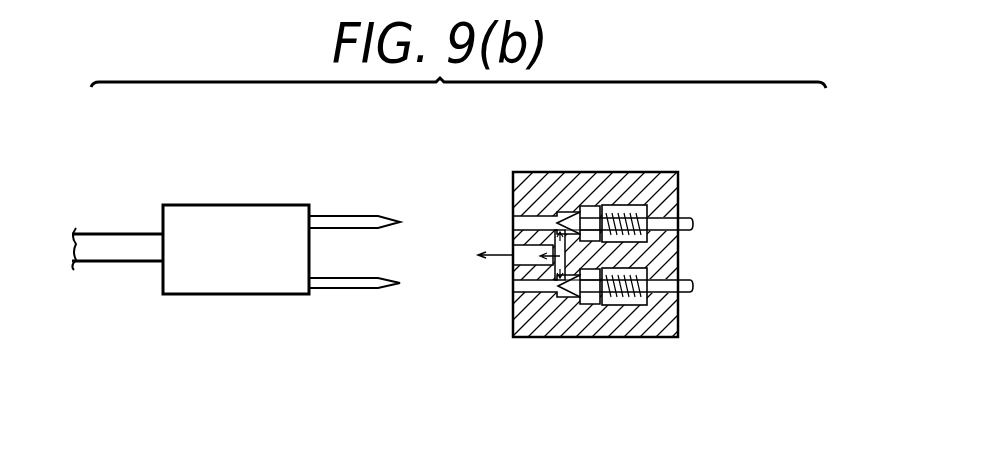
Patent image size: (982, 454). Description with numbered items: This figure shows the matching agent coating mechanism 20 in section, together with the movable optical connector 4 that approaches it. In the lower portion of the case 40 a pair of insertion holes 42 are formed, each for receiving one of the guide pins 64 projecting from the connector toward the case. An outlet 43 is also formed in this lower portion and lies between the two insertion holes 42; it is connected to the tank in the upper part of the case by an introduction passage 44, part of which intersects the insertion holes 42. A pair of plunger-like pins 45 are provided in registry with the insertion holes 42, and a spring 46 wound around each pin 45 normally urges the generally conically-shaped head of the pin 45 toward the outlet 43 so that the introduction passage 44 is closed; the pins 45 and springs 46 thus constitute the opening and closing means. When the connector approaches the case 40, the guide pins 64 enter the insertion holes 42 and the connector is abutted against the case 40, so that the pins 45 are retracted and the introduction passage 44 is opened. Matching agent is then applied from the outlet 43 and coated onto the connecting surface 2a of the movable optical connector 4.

The connector plug 4 is at (210, 290).
The connecting surface 2a is at (312, 252).
The guide pin 64 is at (344, 222).
The matching agent coating mechanism 20 is at (640, 262).
The case 40 is at (622, 172).
The insertion hole 42 is at (513, 218).
The outlet 43 is at (530, 268).
The introduction passage 44 is at (592, 306).
The plunger-like pin 45 is at (683, 208).
The spring 46 is at (655, 305).